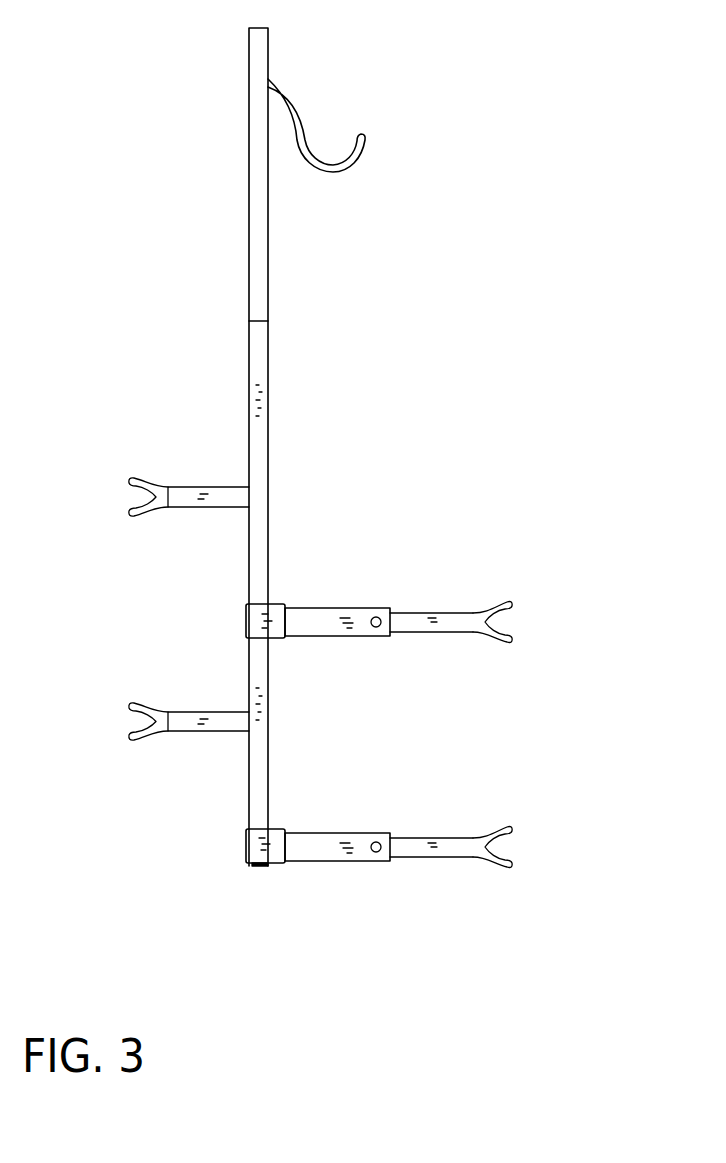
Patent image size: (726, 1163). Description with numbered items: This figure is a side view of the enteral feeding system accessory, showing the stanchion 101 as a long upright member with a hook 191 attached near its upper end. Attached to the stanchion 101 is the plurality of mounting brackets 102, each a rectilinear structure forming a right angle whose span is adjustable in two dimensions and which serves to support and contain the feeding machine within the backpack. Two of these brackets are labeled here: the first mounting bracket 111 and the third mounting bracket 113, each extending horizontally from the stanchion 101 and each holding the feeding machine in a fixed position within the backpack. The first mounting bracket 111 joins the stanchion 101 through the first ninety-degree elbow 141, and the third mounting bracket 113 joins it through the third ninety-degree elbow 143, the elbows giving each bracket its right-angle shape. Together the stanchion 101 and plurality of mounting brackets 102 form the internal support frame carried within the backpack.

The stanchion 101 is at (140, 108).
The hook 191 is at (305, 142).
The first 90-degree elbow 141 is at (255, 622).
The third 90-degree elbow 143 is at (256, 852).
The first mounting bracket 111 is at (353, 605).
The third mounting bracket 113 is at (329, 836).
The plurality of mounting brackets 102 is at (490, 641).